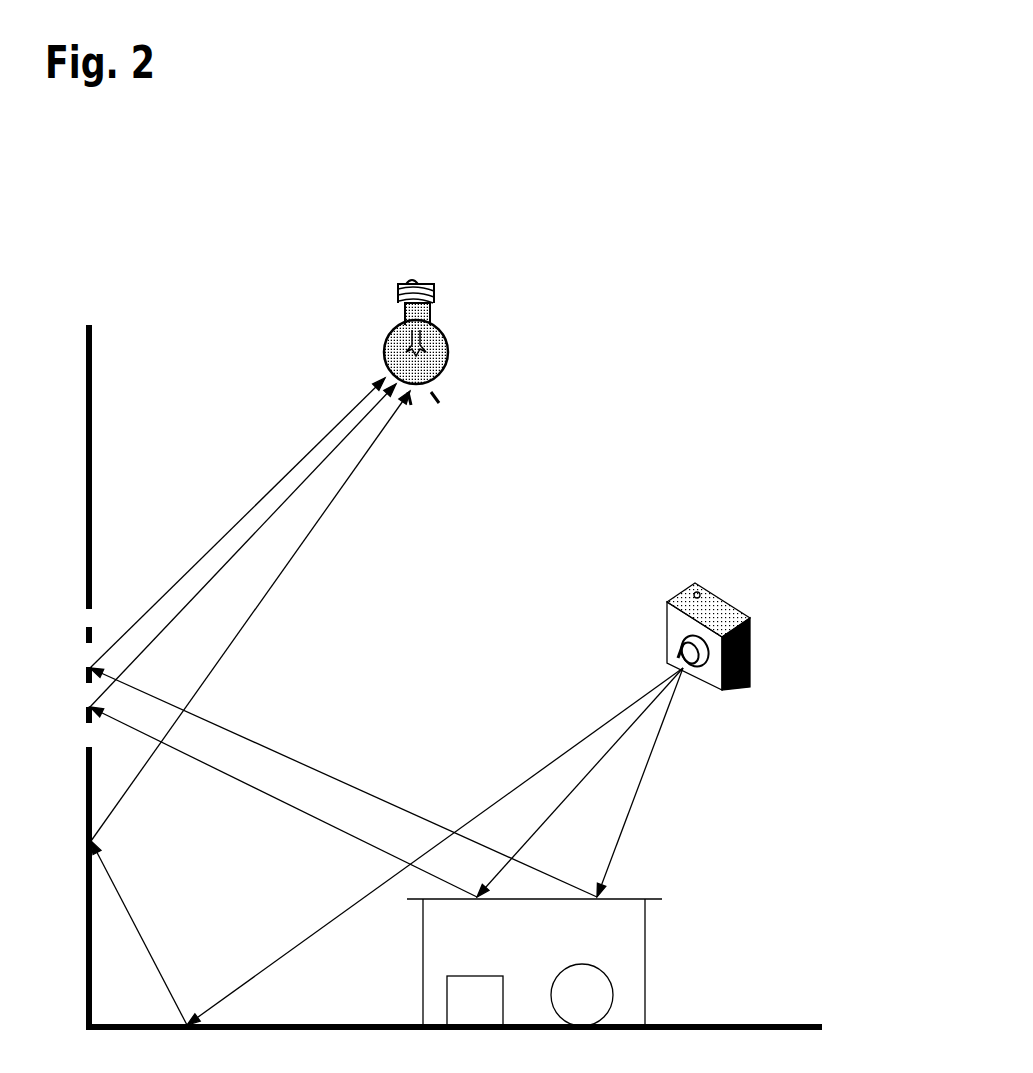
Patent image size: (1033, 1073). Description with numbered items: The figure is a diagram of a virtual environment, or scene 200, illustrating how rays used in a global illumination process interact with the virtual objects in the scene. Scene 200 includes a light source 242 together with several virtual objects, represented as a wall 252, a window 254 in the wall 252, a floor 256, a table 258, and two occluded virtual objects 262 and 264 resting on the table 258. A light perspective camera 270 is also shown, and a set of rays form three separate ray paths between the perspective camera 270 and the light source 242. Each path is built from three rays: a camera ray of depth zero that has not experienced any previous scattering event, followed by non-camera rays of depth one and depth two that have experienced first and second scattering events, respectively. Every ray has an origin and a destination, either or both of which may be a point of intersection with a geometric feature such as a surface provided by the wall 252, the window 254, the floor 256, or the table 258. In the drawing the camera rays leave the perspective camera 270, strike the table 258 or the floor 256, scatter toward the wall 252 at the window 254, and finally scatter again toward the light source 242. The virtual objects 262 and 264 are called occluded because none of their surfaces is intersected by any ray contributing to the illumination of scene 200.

The virtual environment or scene 200 is at (683, 95).
The light source 242 is at (440, 292).
The wall 252 is at (86, 493).
The window 254 is at (86, 680).
The floor 256 is at (333, 1024).
The table 258 is at (690, 905).
The occluded virtual object 262 is at (574, 963).
The occluded virtual object 264 is at (466, 976).
The perspective camera 270 is at (718, 602).